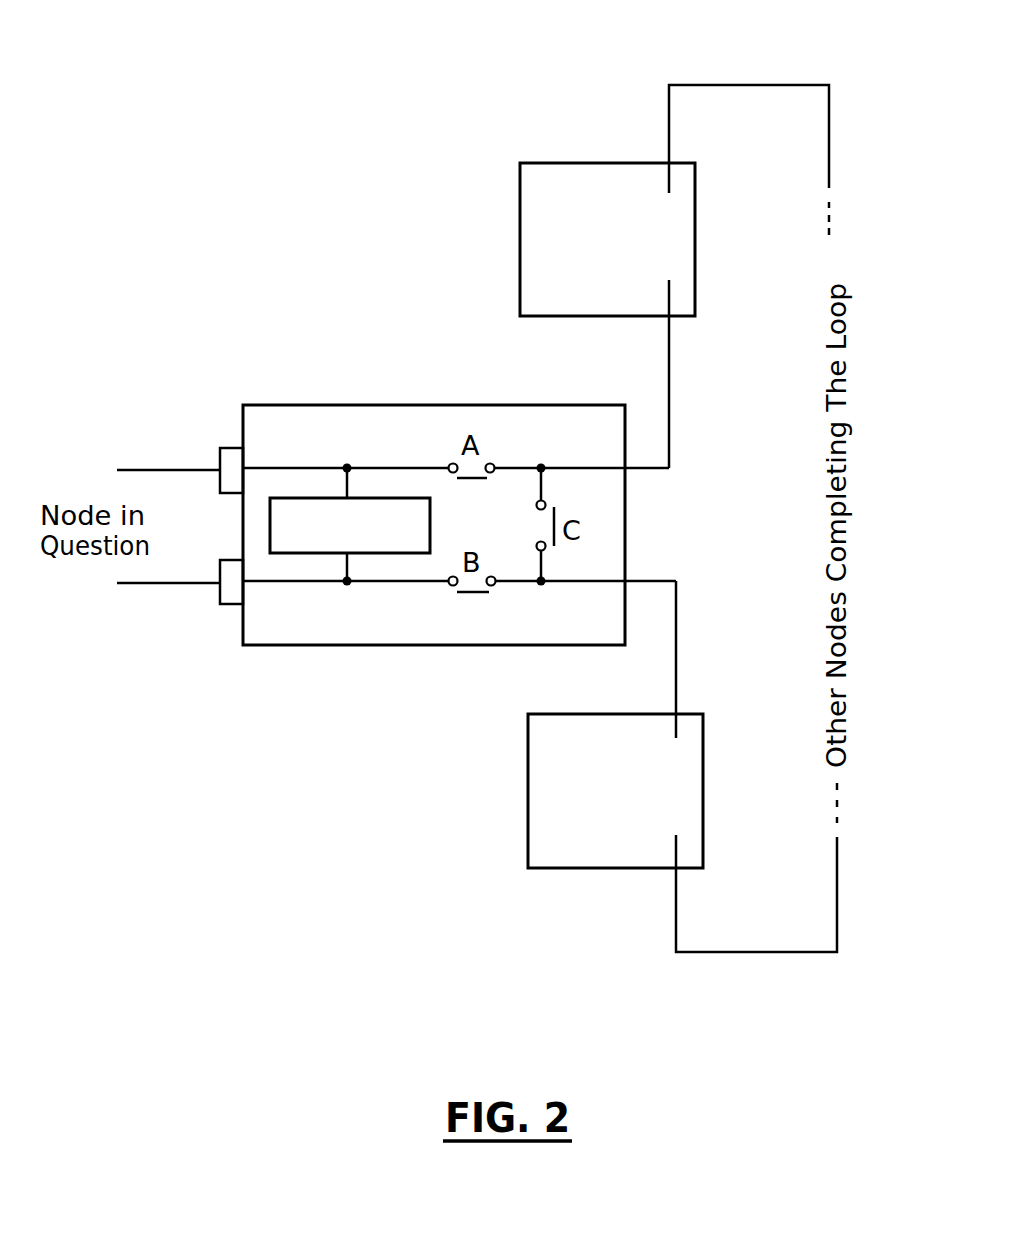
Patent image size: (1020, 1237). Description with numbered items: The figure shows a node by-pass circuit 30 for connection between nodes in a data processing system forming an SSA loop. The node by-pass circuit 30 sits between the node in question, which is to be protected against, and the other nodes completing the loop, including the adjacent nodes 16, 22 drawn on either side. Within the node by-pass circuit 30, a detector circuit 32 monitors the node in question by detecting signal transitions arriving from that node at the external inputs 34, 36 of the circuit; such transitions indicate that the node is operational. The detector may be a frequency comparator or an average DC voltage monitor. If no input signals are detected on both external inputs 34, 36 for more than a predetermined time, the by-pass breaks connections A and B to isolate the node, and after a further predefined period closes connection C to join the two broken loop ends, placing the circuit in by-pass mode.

The node 16 is at (545, 162).
The node 22 is at (553, 868).
The node by-pass circuit 30 is at (300, 405).
The detector circuit 32 is at (357, 555).
The external input 34 is at (170, 468).
The external input 36 is at (175, 585).